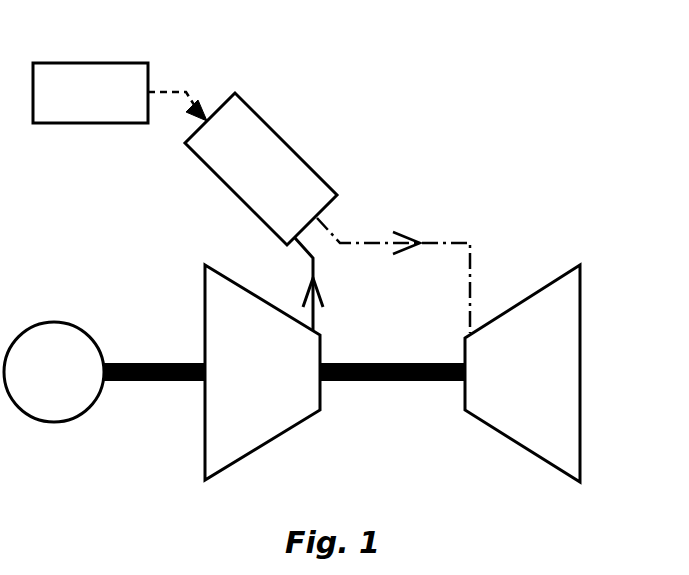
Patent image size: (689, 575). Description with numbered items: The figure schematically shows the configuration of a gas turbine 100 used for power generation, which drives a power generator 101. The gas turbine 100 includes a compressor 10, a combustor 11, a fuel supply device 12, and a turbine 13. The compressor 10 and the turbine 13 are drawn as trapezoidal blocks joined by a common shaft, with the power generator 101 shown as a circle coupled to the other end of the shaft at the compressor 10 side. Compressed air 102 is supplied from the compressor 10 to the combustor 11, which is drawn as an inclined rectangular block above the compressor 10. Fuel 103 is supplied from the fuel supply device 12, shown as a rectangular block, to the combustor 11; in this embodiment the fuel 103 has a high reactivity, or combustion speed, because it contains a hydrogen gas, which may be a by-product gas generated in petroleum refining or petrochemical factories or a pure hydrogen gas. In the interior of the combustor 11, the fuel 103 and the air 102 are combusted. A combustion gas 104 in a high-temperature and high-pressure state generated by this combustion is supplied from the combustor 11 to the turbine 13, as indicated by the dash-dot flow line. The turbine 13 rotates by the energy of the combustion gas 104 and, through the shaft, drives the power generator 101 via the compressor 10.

The gas turbine 100 is at (580, 93).
The compressor 10 is at (283, 425).
The combustor 11 is at (303, 158).
The fuel supply device 12 is at (104, 63).
The turbine 13 is at (507, 430).
The power generator 101 is at (50, 422).
The compressed air 102 is at (314, 320).
The fuel 103 is at (185, 92).
The combustion gas 104 is at (471, 250).